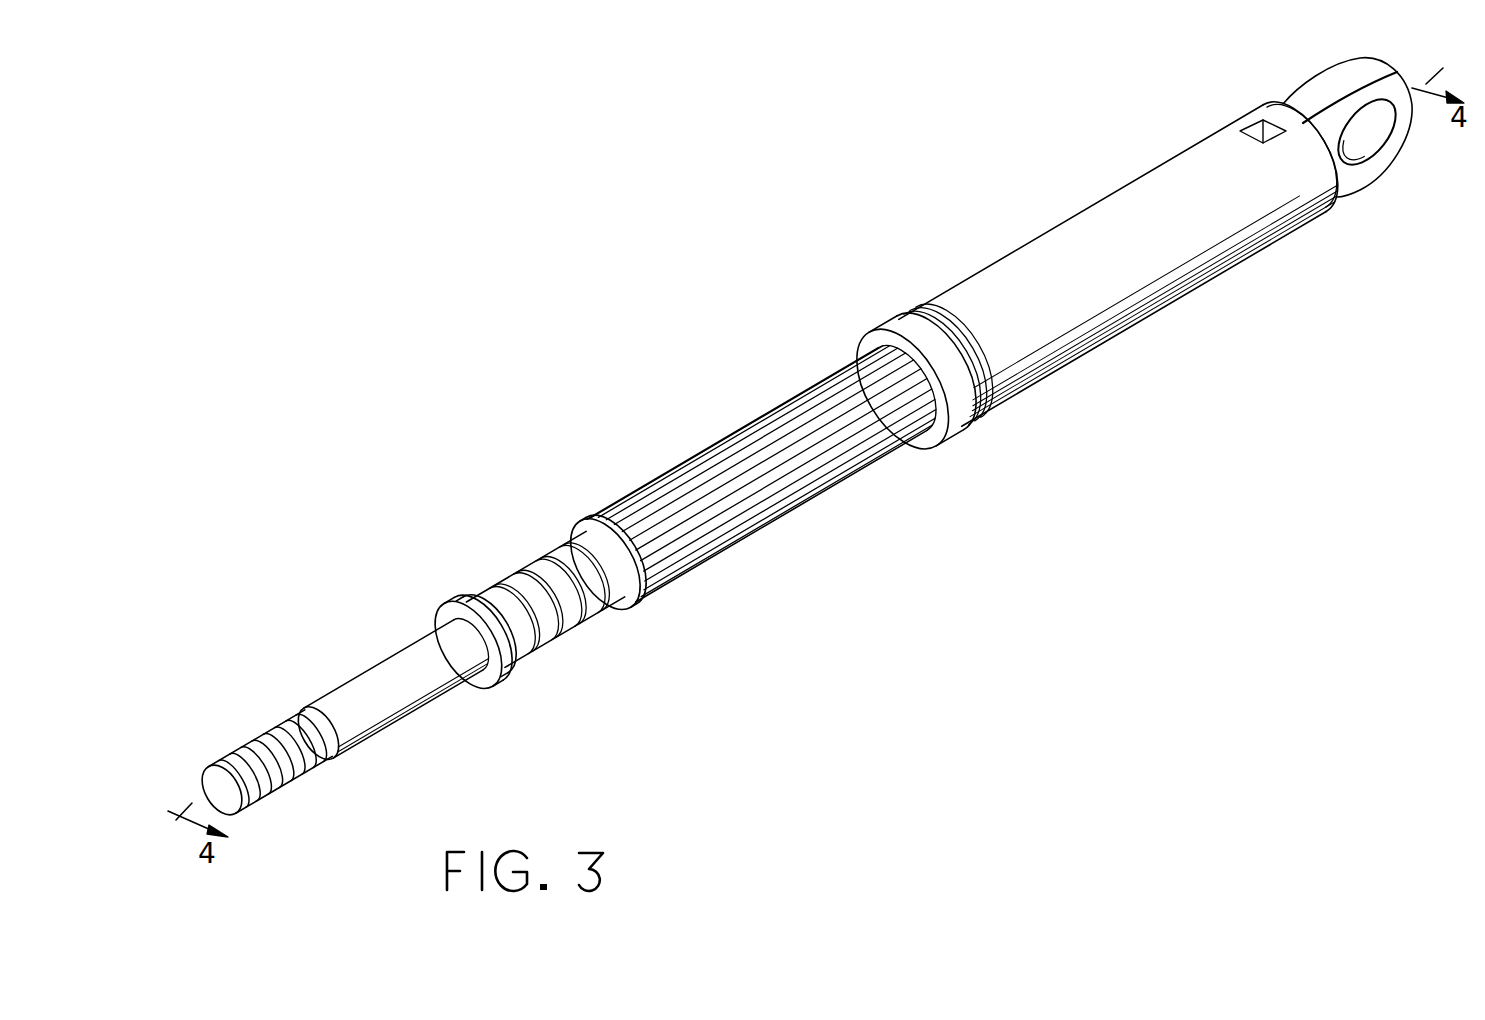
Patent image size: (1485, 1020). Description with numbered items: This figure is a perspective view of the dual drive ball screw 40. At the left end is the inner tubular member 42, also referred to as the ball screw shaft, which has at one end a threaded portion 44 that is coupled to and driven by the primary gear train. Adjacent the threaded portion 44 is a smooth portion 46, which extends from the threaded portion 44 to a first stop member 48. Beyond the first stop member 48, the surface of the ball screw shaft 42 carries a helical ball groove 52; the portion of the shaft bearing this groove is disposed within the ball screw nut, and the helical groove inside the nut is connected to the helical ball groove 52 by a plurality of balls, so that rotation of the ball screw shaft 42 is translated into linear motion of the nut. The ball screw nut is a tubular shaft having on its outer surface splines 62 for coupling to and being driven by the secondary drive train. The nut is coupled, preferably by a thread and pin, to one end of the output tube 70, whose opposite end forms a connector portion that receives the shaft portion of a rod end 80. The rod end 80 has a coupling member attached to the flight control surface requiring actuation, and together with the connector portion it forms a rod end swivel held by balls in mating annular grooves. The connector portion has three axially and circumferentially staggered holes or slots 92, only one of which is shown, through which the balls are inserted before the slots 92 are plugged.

The dual drive ball screw 40 is at (497, 466).
The inner tubular member 42 is at (208, 776).
The threaded portion 44 is at (284, 781).
The smooth portion 46 is at (385, 678).
The first stop member 48 is at (478, 603).
The helical ball groove 52 is at (587, 600).
The splines 62 is at (826, 472).
The output tube 70 is at (1113, 307).
The rod end 80 is at (1367, 173).
The holes or slots 92 is at (1255, 128).